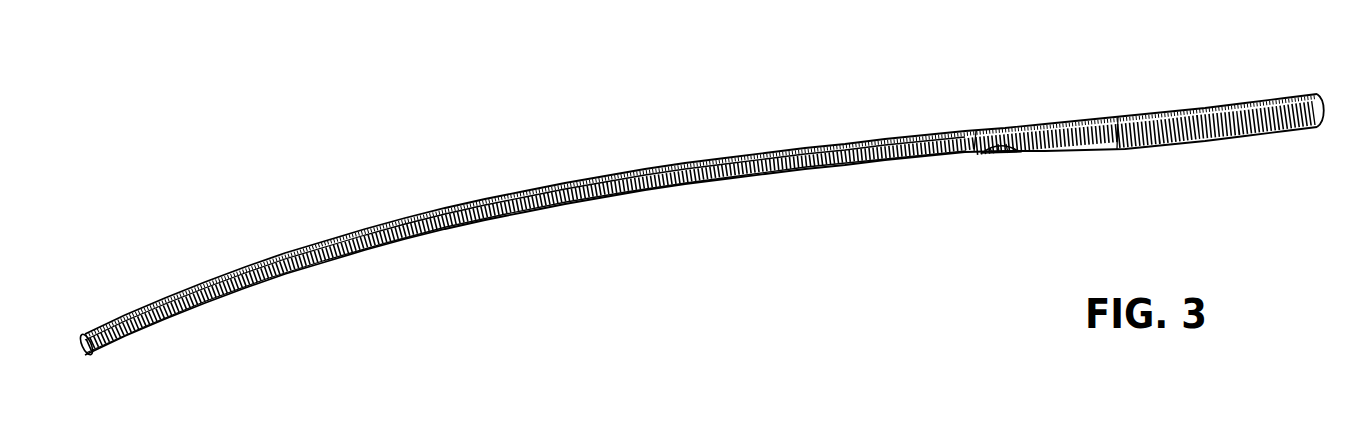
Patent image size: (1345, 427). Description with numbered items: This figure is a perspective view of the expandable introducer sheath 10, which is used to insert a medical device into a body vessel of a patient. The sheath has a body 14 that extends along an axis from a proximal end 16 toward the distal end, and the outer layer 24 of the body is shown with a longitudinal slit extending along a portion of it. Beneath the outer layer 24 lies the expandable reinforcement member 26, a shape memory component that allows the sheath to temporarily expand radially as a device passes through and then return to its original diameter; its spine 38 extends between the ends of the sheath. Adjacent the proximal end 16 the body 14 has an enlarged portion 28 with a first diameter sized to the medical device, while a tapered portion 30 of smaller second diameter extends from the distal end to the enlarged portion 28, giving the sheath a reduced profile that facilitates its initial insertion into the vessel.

The expandable introducer sheath 10 is at (684, 128).
The body 14 is at (470, 225).
The proximal end 16 is at (1319, 94).
The outer layer 24 is at (334, 259).
The expandable reinforcement member 26 is at (1005, 153).
The enlarged portion 28 is at (1168, 133).
The tapered portion 30 is at (619, 198).
The spine 38 is at (297, 250).